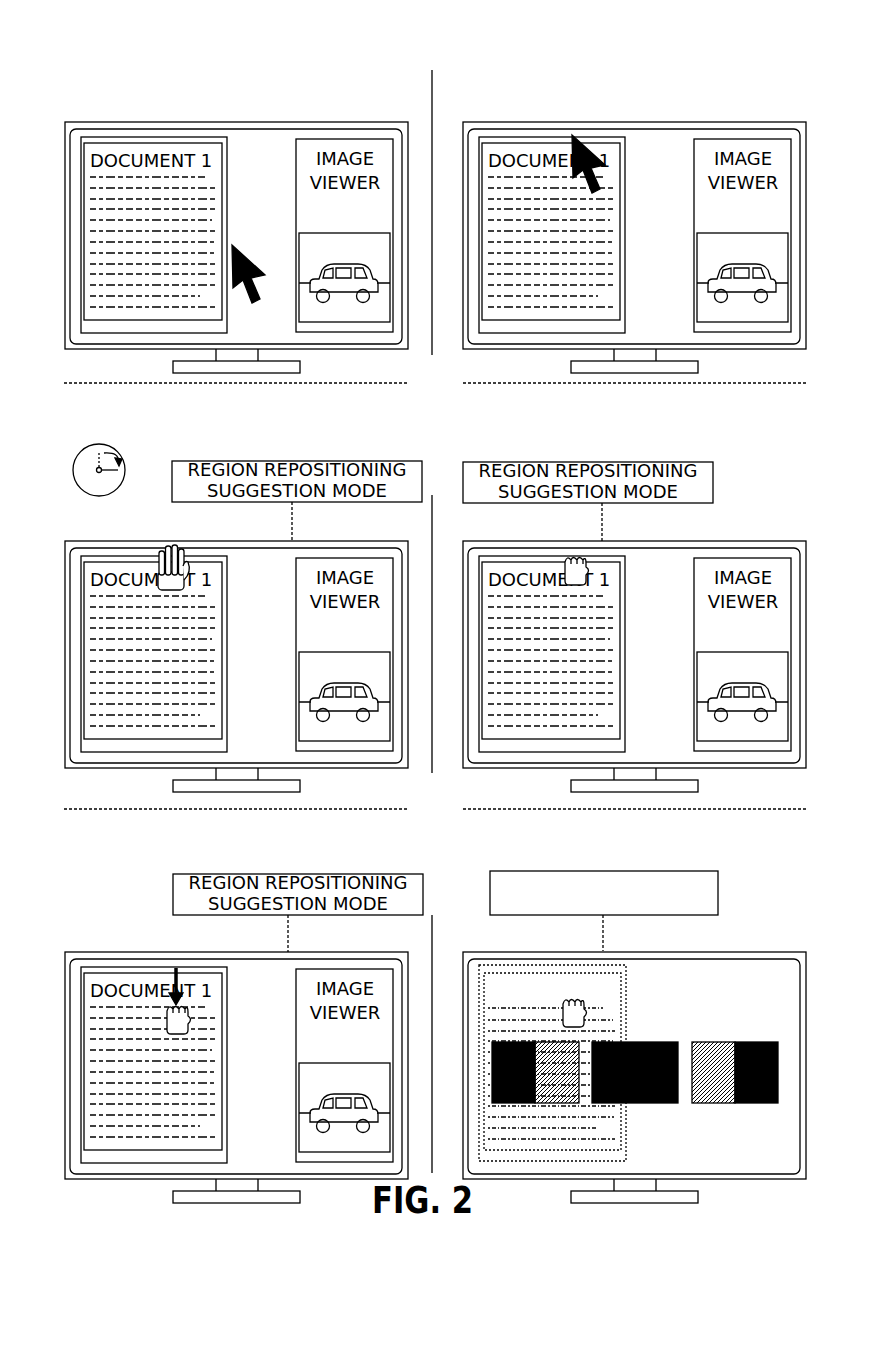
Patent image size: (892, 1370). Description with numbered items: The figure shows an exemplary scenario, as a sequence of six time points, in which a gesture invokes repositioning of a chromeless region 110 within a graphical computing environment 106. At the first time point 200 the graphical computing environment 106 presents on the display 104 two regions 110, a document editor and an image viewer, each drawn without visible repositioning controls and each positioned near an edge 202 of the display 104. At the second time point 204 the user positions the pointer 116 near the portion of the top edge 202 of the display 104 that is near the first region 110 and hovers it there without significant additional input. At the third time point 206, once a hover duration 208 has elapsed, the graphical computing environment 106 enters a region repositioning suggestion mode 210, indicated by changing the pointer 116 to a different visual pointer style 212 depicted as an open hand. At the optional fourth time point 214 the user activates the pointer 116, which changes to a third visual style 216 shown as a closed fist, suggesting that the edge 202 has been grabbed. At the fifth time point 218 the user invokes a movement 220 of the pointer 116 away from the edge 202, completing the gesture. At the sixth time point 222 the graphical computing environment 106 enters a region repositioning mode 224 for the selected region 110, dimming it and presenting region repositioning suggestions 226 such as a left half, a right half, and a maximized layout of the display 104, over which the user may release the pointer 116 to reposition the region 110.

The display 104 is at (127, 122).
The graphical computing environment 106 is at (187, 136).
The region 110 is at (296, 204).
The pointer 116 is at (241, 253).
The first time point 200 is at (146, 80).
The edge 202 is at (203, 129).
The second time point 204 is at (738, 80).
The third time point 206 is at (148, 424).
The hover duration 208 is at (127, 460).
The region repositioning suggestion mode 210 is at (343, 461).
The visual pointer style 212 is at (189, 572).
The fourth time point 214 is at (738, 424).
The third visual style 216 is at (588, 572).
The fifth time point 218 is at (146, 844).
The movement 220 is at (181, 987).
The sixth time point 222 is at (738, 844).
The region repositioning mode 224 is at (548, 871).
The region repositioning suggestion 226 is at (545, 1042).